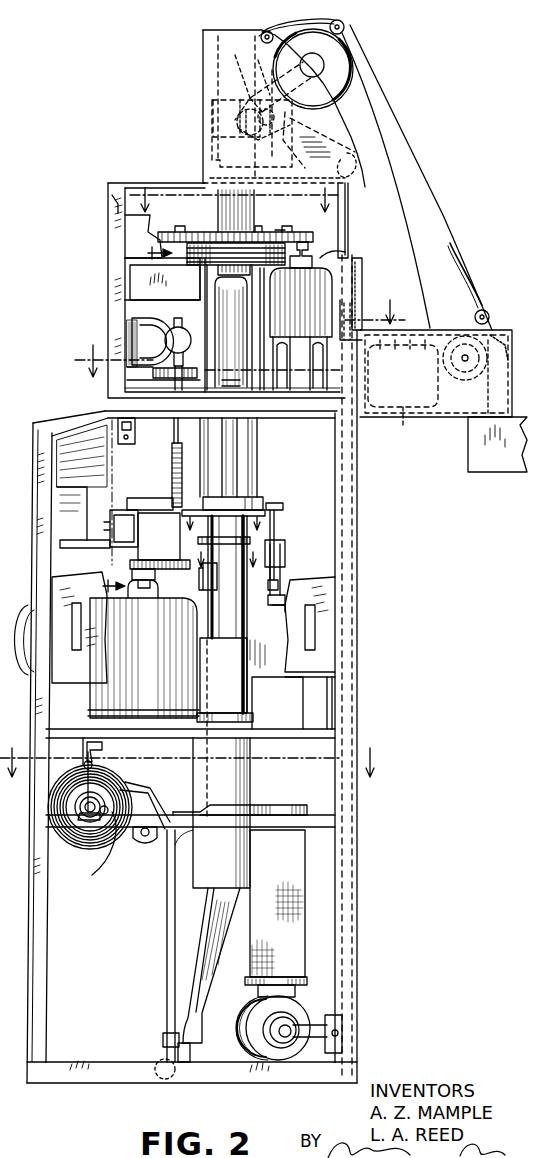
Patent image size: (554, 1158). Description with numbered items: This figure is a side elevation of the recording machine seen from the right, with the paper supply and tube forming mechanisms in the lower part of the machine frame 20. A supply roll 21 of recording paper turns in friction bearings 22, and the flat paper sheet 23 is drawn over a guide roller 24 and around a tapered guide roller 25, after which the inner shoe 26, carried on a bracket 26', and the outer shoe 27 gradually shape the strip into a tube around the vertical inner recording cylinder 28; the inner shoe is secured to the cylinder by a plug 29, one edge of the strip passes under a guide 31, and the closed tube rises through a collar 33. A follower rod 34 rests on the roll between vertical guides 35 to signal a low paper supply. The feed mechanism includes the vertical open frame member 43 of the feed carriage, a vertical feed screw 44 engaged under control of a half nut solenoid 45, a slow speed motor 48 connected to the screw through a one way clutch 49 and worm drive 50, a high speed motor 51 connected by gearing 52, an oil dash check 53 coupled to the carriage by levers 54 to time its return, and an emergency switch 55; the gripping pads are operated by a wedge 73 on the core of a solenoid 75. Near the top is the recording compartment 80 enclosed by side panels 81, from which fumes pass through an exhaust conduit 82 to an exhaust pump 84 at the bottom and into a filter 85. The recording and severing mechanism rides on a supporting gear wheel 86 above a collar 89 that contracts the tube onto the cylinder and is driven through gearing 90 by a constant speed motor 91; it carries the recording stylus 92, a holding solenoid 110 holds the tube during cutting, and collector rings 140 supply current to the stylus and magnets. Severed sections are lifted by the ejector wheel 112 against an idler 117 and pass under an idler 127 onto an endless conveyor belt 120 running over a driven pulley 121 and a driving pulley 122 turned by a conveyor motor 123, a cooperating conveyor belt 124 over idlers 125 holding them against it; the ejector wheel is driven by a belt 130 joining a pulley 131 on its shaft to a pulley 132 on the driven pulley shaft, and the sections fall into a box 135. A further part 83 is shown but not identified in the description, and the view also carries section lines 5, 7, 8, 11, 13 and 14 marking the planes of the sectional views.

The machine frame 20 is at (38, 669).
The supply roll 21 is at (120, 800).
The friction bearings 22 is at (100, 845).
The paper sheet 23 is at (128, 778).
The guide roller 24 is at (146, 842).
The guide roller 25 is at (176, 1072).
The inner shoe 26 is at (211, 965).
The bracket 26' is at (141, 946).
The outer shoe 27 is at (212, 880).
The inner recording cylinder 28 is at (239, 616).
The plug 29 is at (240, 806).
The guide 31 is at (217, 582).
The collar 33 is at (224, 557).
The rod 34 is at (104, 757).
The vertical guides 35 is at (87, 780).
The vertical open frame member 43 is at (258, 498).
The feed screw 44 is at (171, 460).
The half nut solenoid 45 is at (130, 537).
The slow speed motor 48 is at (145, 328).
The one way clutch 49 is at (160, 380).
The worm drive 50 is at (181, 327).
The high speed motor 51 is at (154, 681).
The gearing 52 is at (128, 564).
The oil dash check 53 is at (285, 568).
The levers 54 is at (276, 522).
The emergency switch 55 is at (137, 430).
The wedge 73 is at (232, 378).
The solenoid 75 is at (241, 466).
The recording compartment 80 is at (325, 255).
The side panels 81 is at (152, 178).
The exhaust conduit 82 is at (362, 288).
The plate 83 is at (355, 213).
The exhaust pump 84 is at (246, 1030).
The filter 85 is at (305, 920).
The supporting gear wheel 86 is at (236, 227).
The collar 89 is at (222, 228).
The gearing 90 is at (304, 240).
The motor 91 is at (314, 317).
The recording stylus 92 is at (264, 220).
The holding solenoid 110 is at (148, 277).
The ejector wheel 112 is at (284, 108).
The idler 117 is at (255, 107).
The endless conveyor belt 120 is at (383, 123).
The driven pulley 121 is at (338, 62).
The driving pulley 122 is at (462, 382).
The conveyor motor 123 is at (403, 418).
The cooperating conveyor belt 124 is at (440, 207).
The idlers 125 is at (345, 27).
The idler 127 is at (262, 31).
The belt 130 is at (292, 114).
The pulley 131 is at (258, 75).
The pulley 132 is at (310, 57).
The box 135 is at (498, 475).
The collector rings 140 is at (244, 276).
The section line 5- 5 is at (235, 213).
The section line 7- 7 is at (240, 328).
The section line 8- 8 is at (130, 420).
The section line 11- 11 is at (193, 751).
The section line 13- 13 is at (230, 569).
The section line 14- 14 is at (227, 531).